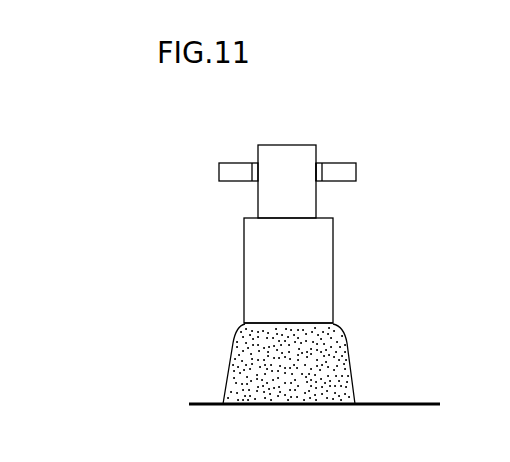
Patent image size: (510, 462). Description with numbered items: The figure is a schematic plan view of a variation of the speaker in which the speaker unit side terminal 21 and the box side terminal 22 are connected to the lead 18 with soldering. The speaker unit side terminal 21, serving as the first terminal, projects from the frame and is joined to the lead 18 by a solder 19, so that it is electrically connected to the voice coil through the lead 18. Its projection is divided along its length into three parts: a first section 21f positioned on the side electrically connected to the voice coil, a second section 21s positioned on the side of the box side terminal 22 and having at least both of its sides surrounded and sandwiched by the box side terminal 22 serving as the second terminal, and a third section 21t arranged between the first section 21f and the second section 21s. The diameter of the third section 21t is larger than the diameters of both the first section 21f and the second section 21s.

The lead 18 is at (423, 402).
The solder 19 is at (343, 370).
The speaker unit side terminal 21 is at (287, 155).
The second section 21s is at (300, 172).
The third section 21t is at (333, 273).
The first section 21f is at (303, 405).
The box side terminal 22 is at (237, 170).